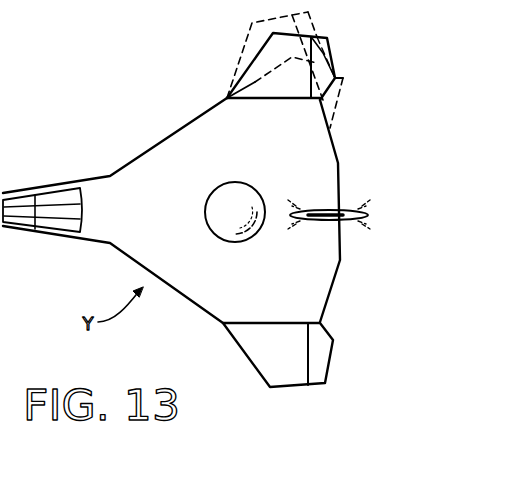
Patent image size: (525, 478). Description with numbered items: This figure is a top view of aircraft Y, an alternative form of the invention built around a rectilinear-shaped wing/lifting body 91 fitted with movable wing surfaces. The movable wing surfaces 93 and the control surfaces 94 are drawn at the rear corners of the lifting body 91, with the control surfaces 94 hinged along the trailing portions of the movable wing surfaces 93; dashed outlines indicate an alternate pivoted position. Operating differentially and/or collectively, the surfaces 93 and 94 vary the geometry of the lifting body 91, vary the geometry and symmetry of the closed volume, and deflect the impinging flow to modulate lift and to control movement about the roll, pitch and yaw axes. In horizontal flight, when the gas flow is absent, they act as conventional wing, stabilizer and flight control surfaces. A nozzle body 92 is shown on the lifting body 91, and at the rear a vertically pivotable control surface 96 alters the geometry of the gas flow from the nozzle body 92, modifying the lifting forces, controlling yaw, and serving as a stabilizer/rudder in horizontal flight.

The wing/lifting body 91 is at (147, 163).
The nozzle body 92 is at (245, 241).
The movable wing surfaces 93 is at (253, 70).
The control surfaces 94 is at (305, 18).
The vertically pivotable control surface 96 is at (345, 205).